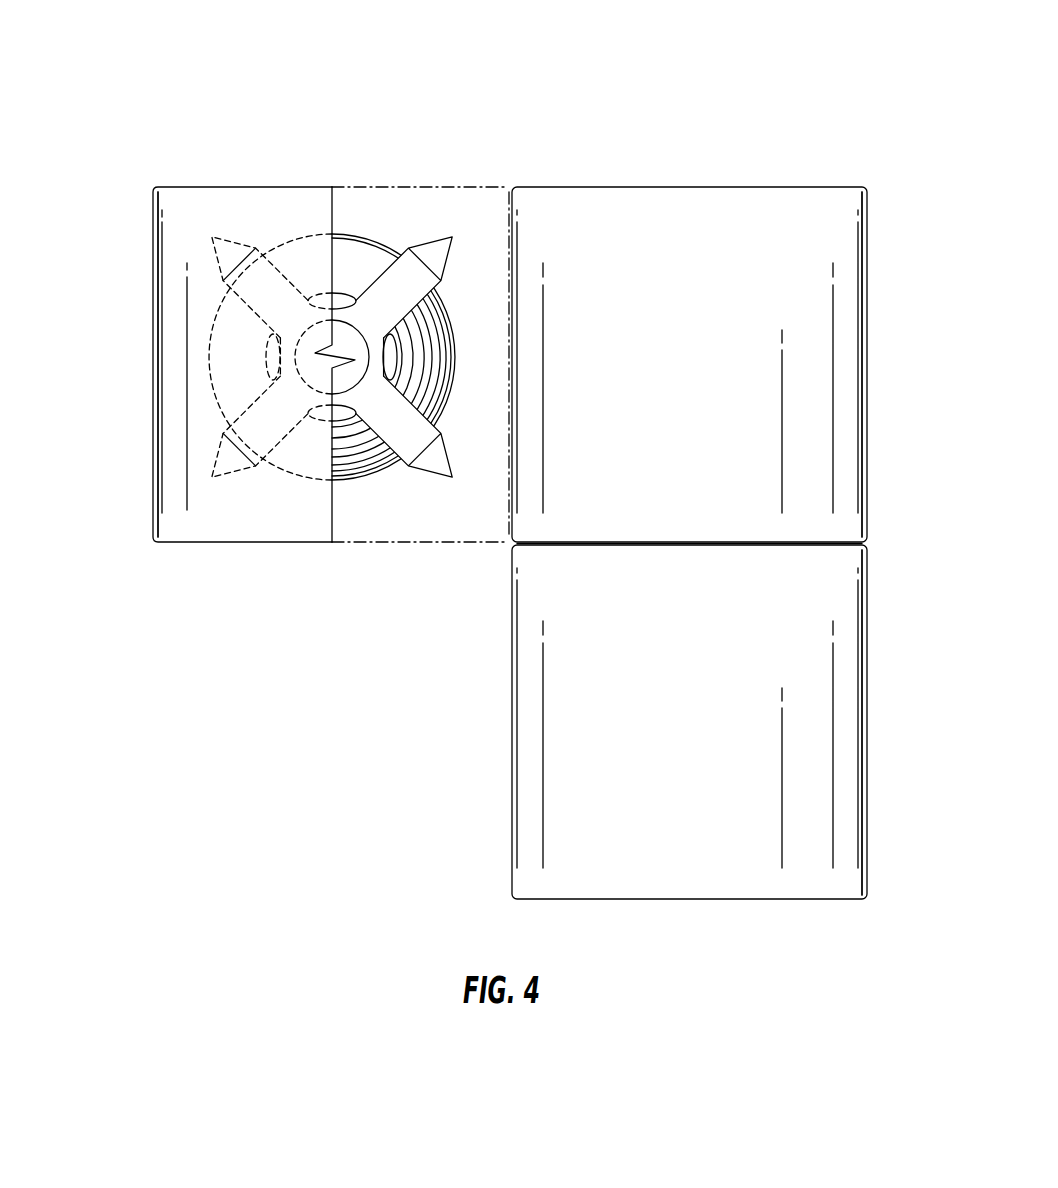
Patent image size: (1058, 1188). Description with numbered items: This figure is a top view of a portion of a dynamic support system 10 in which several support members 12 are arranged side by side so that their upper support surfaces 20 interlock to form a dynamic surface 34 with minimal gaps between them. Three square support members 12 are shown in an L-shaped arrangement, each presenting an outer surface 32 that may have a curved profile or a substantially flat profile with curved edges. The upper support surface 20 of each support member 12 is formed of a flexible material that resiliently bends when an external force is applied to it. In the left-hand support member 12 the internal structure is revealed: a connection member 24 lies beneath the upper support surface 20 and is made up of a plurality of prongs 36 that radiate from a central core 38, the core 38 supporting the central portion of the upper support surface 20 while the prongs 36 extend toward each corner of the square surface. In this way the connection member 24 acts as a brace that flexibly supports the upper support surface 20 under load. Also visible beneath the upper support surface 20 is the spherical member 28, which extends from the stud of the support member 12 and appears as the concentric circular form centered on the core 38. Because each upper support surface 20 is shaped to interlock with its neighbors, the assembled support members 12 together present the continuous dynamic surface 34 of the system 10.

The dynamic support system 10 is at (118, 145).
The support member 12 is at (702, 187).
The upper support surface 20 is at (180, 525).
The connection member 24 is at (342, 317).
The spherical member 28 is at (442, 317).
The outer surface 32 is at (243, 200).
The dynamic surface 34 is at (588, 545).
The prong 36 is at (410, 262).
The central core 38 is at (343, 380).